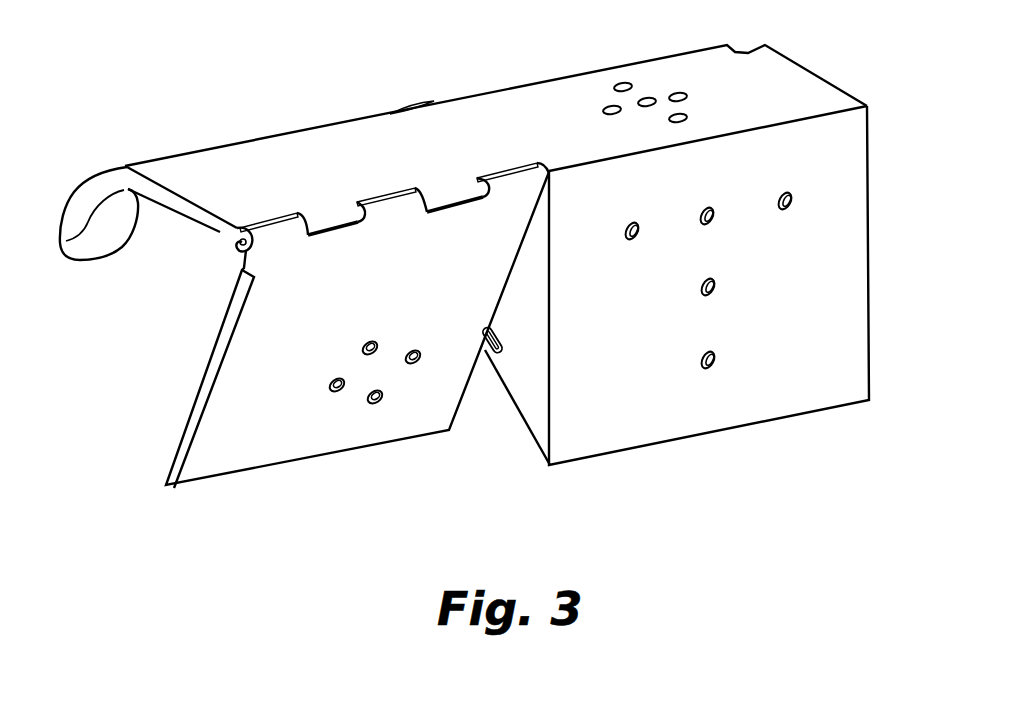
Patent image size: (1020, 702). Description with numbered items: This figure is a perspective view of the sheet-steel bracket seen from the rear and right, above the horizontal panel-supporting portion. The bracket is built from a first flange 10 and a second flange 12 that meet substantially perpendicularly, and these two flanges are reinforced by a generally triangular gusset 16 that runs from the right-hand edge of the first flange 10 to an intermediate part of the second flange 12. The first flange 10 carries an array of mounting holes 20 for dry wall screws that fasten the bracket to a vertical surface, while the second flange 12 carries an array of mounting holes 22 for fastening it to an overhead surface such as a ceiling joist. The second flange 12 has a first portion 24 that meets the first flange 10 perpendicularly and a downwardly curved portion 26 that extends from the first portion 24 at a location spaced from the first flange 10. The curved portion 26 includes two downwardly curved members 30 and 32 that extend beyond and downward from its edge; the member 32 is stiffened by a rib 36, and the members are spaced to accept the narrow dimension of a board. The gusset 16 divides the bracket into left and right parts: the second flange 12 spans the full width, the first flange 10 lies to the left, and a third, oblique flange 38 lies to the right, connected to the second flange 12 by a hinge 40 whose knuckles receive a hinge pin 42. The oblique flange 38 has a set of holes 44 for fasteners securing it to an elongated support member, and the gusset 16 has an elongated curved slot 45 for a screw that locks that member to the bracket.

The first flange 10 is at (530, 232).
The second flange 12 is at (496, 117).
The gusset 16 is at (540, 403).
The mounting holes 20 is at (784, 210).
The mounting holes 22 is at (620, 108).
The first portion 24 is at (496, 85).
The downwardly curved portion 26 is at (285, 128).
The downwardly curved member 30 is at (438, 98).
The downwardly curved member 32 is at (140, 163).
The rib 36 is at (177, 205).
The third oblique flange 38 is at (337, 330).
The hinge 40 is at (332, 217).
The hinge pin 42 is at (238, 252).
The holes 44 is at (408, 350).
The curved slot 45 is at (497, 353).